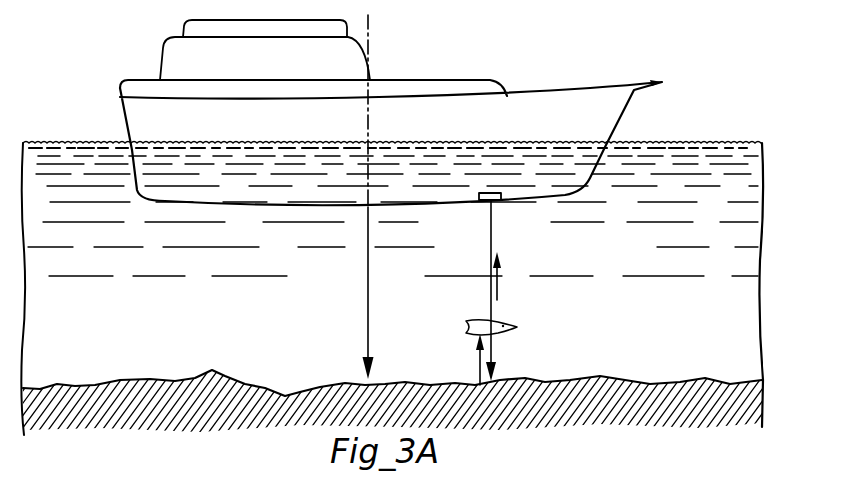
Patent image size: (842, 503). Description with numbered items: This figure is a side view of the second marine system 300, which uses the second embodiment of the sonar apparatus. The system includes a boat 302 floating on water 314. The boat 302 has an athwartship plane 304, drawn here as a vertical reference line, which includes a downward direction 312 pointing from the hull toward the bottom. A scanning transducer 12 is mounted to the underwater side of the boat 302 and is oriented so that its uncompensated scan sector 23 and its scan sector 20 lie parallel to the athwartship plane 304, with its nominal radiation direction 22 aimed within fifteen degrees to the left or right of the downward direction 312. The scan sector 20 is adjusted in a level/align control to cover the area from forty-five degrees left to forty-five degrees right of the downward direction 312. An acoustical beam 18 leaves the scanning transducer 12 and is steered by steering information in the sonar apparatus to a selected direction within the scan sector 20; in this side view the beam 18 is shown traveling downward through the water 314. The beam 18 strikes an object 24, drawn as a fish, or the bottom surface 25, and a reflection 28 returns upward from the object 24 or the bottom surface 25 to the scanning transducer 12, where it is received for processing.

The scanning transducer 12 is at (490, 193).
The acoustical beam 18 is at (558, 292).
The scan sector 20 is at (486, 292).
The nominal radiation direction 22 is at (486, 292).
The uncompensated scan sector 23 is at (491, 238).
The object 24 is at (466, 326).
The bottom surface 25 is at (272, 390).
The reflection 28 is at (498, 300).
The second marine system 300 is at (280, 306).
The boat 302 is at (530, 100).
The athwartship plane 304 is at (368, 129).
The downward direction 312 is at (368, 308).
The water 314 is at (660, 320).